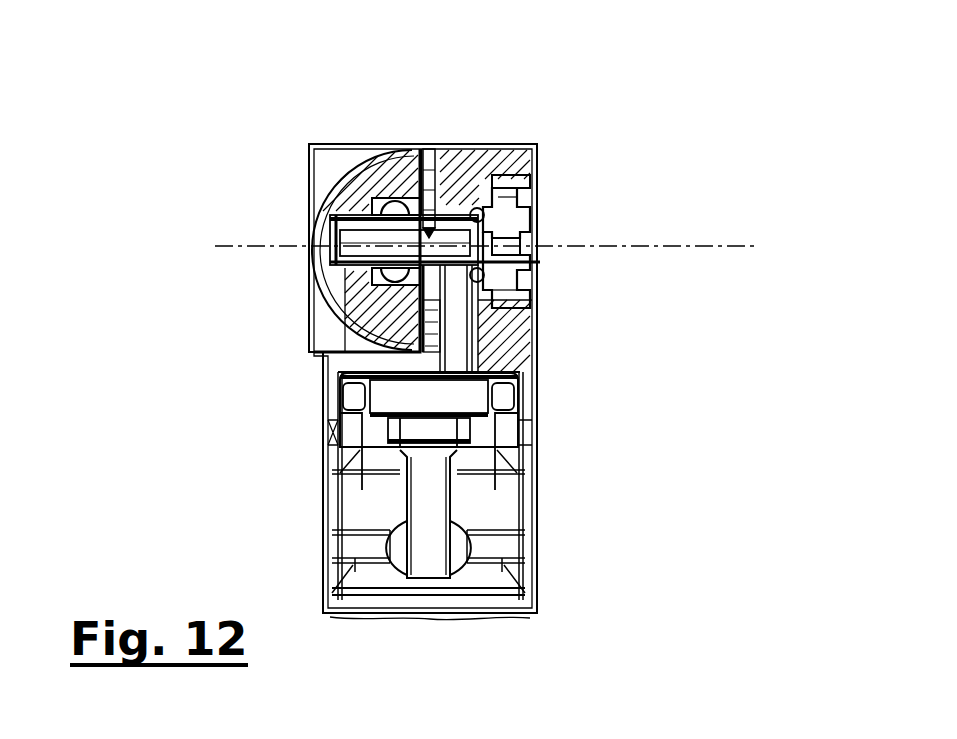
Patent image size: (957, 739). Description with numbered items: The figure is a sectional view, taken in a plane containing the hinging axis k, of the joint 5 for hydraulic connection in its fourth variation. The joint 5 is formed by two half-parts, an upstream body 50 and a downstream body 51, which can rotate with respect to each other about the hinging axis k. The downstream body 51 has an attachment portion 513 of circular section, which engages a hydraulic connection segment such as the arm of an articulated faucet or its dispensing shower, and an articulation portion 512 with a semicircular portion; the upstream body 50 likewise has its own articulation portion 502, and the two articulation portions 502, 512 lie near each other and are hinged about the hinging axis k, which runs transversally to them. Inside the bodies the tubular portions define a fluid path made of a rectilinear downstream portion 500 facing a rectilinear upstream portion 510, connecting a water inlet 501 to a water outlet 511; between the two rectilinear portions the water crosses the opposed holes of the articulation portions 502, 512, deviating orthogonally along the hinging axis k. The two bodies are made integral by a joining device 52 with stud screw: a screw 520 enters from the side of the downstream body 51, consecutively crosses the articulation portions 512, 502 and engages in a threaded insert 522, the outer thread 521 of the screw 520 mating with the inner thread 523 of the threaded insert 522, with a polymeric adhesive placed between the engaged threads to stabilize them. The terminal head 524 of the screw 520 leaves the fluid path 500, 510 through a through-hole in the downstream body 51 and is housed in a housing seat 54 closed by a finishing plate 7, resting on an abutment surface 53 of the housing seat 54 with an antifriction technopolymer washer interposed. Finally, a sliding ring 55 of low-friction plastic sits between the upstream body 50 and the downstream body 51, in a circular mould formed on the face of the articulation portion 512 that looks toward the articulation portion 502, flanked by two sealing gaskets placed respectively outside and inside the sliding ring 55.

The joint for hydraulic connection 5 is at (192, 263).
The finishing plate 7 is at (523, 233).
The upstream body 50 is at (366, 182).
The downstream body 51 is at (527, 432).
The joining device 52 is at (448, 240).
The abutment surface 53 is at (520, 295).
The housing seat 54 is at (500, 185).
The sliding ring 55 is at (424, 148).
The downstream portion of the fluid path 500 is at (457, 333).
The water inlet 501 is at (380, 275).
The articulation portion of the upstream body 502 is at (390, 192).
The upstream portion of the fluid path 510 is at (337, 357).
The water outlet 511 is at (433, 400).
The articulation portion of the downstream body 512 is at (505, 357).
The attachment portion of the downstream body 513 is at (327, 457).
The screw 520 is at (452, 235).
The outer thread 521 is at (330, 240).
The threaded insert 522 is at (316, 196).
The inner thread 523 is at (320, 217).
The terminal head 524 is at (522, 212).
The hinging axis k is at (737, 247).